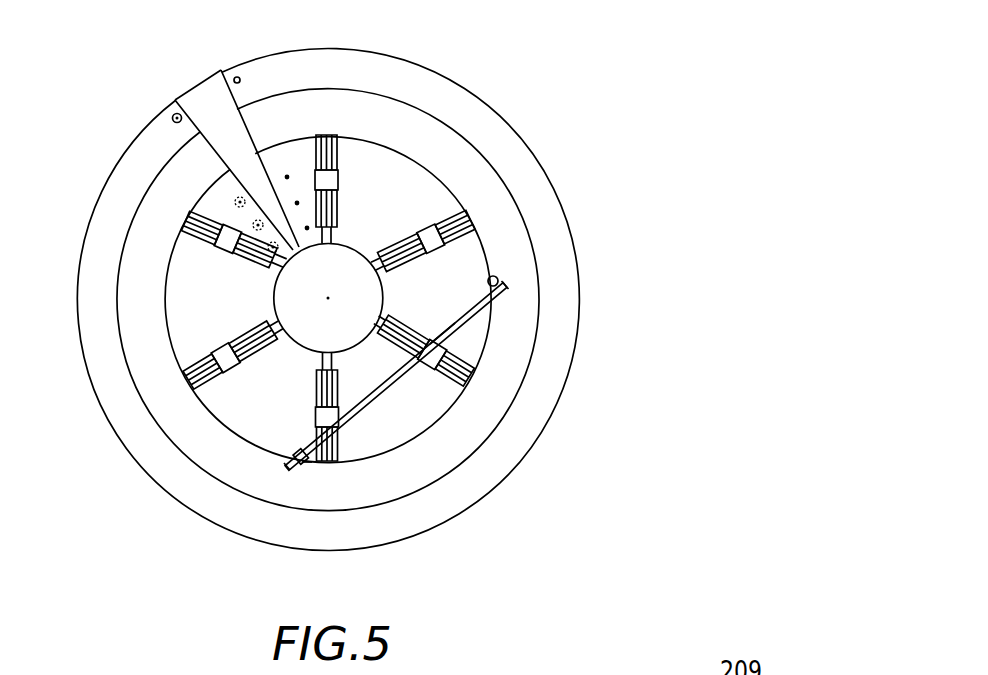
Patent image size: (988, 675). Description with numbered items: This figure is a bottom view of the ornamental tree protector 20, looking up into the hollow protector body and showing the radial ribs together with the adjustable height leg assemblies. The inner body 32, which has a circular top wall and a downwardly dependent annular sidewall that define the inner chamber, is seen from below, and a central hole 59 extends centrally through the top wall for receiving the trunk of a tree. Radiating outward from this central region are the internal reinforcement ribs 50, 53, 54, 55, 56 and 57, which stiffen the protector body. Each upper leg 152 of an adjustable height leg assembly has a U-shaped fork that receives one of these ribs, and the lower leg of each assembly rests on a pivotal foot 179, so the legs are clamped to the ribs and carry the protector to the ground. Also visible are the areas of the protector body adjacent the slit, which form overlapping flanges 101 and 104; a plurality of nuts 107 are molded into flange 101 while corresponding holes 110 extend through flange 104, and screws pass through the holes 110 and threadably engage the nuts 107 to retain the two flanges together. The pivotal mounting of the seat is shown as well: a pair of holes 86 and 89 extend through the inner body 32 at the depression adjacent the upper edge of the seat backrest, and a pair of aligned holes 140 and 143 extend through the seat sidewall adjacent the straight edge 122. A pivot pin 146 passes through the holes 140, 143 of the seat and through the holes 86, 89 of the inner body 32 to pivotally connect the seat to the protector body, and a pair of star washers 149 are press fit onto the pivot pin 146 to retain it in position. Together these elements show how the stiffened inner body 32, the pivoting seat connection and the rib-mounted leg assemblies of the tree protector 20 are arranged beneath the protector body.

The tree protector 20 is at (584, 76).
The inner body 32 is at (562, 197).
The radial internal reinforcement rib 50 is at (375, 268).
The radial internal reinforcement rib 53 is at (312, 351).
The radial internal reinforcement rib 54 is at (273, 335).
The radial internal reinforcement rib 55 is at (272, 265).
The radial internal reinforcement rib 56 is at (328, 236).
The hub port 57 is at (384, 321).
The central hole 59 is at (356, 250).
The hole 86 is at (443, 280).
The hole 89 is at (298, 452).
The overlapping flange 101 is at (167, 110).
The overlapping flange 104 is at (236, 77).
The nut 107 is at (172, 121).
The hole 110 is at (244, 80).
The straight edge 122 is at (468, 318).
The hole 140 is at (496, 283).
The hole 143 is at (281, 461).
The pivot pin 146 is at (465, 336).
The star washer 149 is at (498, 303).
The upper leg 152 is at (434, 210).
The pivotal foot 179 is at (340, 170).